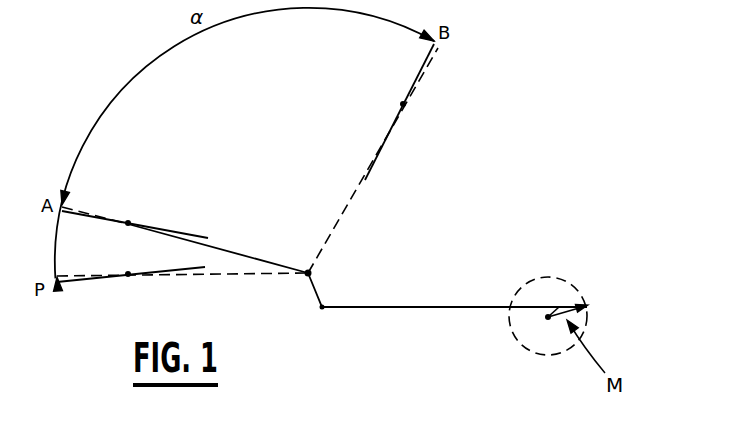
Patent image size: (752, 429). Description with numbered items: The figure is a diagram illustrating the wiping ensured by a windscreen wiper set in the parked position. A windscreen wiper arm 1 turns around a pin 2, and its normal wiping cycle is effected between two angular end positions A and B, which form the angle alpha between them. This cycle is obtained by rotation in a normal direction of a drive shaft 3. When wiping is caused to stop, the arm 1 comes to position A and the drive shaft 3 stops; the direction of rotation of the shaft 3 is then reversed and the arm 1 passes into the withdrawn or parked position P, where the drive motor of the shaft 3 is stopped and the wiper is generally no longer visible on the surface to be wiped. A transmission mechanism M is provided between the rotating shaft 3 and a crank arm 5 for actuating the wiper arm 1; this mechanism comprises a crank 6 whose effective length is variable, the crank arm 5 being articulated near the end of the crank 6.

The windscreen wiper arm 1 is at (193, 238).
The pin 2 is at (312, 272).
The drive shaft 3 is at (547, 313).
The crank arm 5 is at (408, 309).
The crank 6 is at (559, 307).